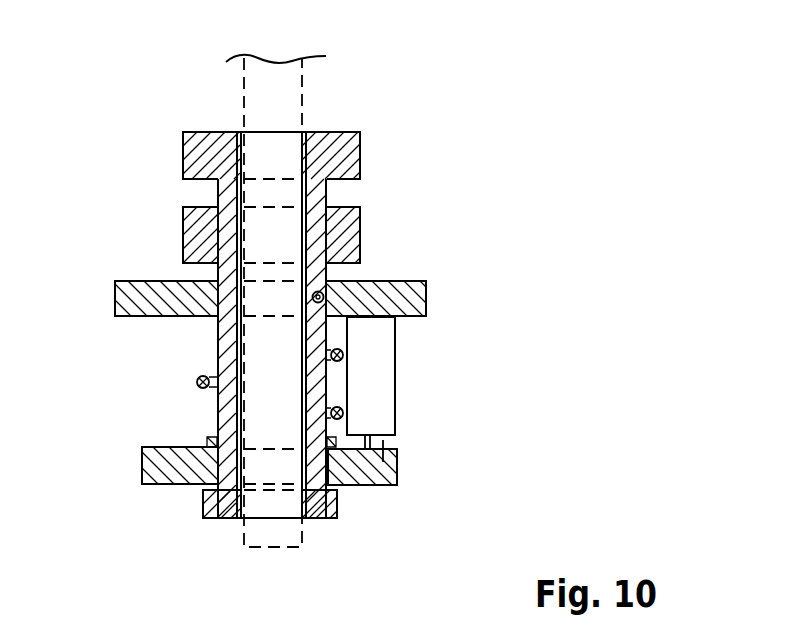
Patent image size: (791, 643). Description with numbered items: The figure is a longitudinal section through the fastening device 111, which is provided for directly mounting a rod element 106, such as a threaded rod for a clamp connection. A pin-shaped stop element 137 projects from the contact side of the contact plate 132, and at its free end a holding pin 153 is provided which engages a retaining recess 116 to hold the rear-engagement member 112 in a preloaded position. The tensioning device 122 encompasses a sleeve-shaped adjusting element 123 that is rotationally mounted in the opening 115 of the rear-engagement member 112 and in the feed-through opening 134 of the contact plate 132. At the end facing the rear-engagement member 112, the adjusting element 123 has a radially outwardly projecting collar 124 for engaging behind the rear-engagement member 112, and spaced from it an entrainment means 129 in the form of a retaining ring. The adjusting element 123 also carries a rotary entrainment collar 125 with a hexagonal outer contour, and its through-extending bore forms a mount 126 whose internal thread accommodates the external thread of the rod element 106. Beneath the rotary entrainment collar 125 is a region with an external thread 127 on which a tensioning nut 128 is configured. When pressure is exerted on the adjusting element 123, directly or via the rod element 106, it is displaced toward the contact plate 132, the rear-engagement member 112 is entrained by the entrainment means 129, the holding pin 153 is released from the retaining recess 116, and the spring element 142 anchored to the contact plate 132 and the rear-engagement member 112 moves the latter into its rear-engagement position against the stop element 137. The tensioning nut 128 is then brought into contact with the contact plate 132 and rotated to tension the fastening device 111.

The rod element 106 is at (290, 90).
The fastening device 111 is at (518, 177).
The rear-engagement member 112 is at (363, 483).
The opening 115 is at (213, 467).
The retaining recess 116 is at (365, 463).
The tensioning device 122 is at (390, 238).
The adjusting element 123 is at (220, 350).
The collar 124 is at (210, 503).
The rotary entrainment collar 125 is at (345, 157).
The mount 126 is at (268, 350).
The external thread 127 is at (220, 192).
The tensioning nut 128 is at (198, 235).
The entrainment means 129 is at (217, 437).
The contact plate 132 is at (403, 304).
The feed-through opening 134 is at (330, 295).
The stop element 137 is at (380, 393).
The spring element 142 is at (343, 353).
The holding pin 153 is at (382, 442).